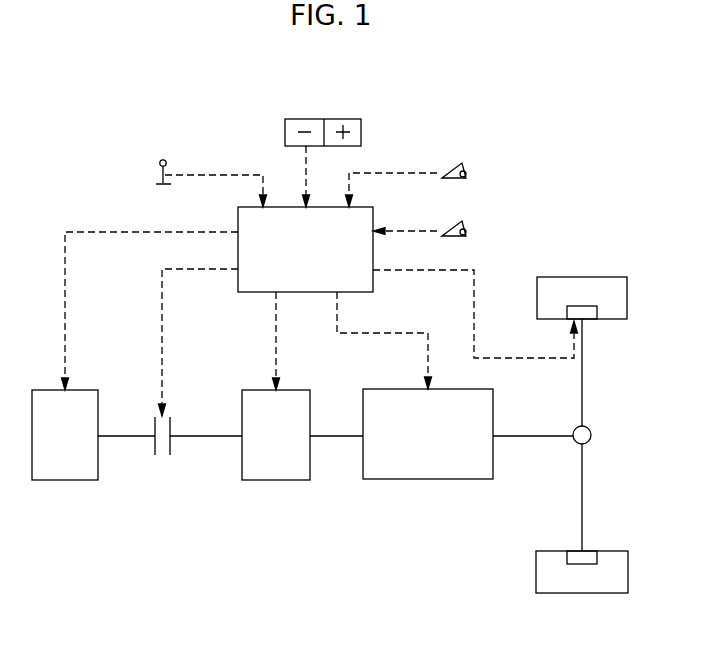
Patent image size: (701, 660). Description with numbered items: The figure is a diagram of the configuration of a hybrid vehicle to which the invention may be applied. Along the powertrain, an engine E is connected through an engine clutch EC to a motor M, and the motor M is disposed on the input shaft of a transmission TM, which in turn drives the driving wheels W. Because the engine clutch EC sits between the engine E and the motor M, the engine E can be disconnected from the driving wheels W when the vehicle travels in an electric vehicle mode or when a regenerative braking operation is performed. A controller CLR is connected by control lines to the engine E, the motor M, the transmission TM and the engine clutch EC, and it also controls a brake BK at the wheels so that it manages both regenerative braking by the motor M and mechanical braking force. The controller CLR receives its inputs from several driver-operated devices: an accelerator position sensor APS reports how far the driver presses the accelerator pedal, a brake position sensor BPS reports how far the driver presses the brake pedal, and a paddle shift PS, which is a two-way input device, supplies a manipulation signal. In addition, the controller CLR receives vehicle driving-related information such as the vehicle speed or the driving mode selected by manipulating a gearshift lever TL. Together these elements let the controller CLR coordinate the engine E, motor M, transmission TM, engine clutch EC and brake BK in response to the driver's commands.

The controller CLR is at (305, 249).
The gearshift lever TL is at (160, 163).
The paddle shift PS is at (280, 112).
The accelerator position sensor APS is at (430, 184).
The brake position sensor BPS is at (443, 231).
The engine E is at (135, 356).
The engine clutch EC is at (162, 478).
The motor M is at (276, 386).
The transmission TM is at (441, 385).
The driving wheels W is at (602, 282).
The brake BK is at (592, 320).